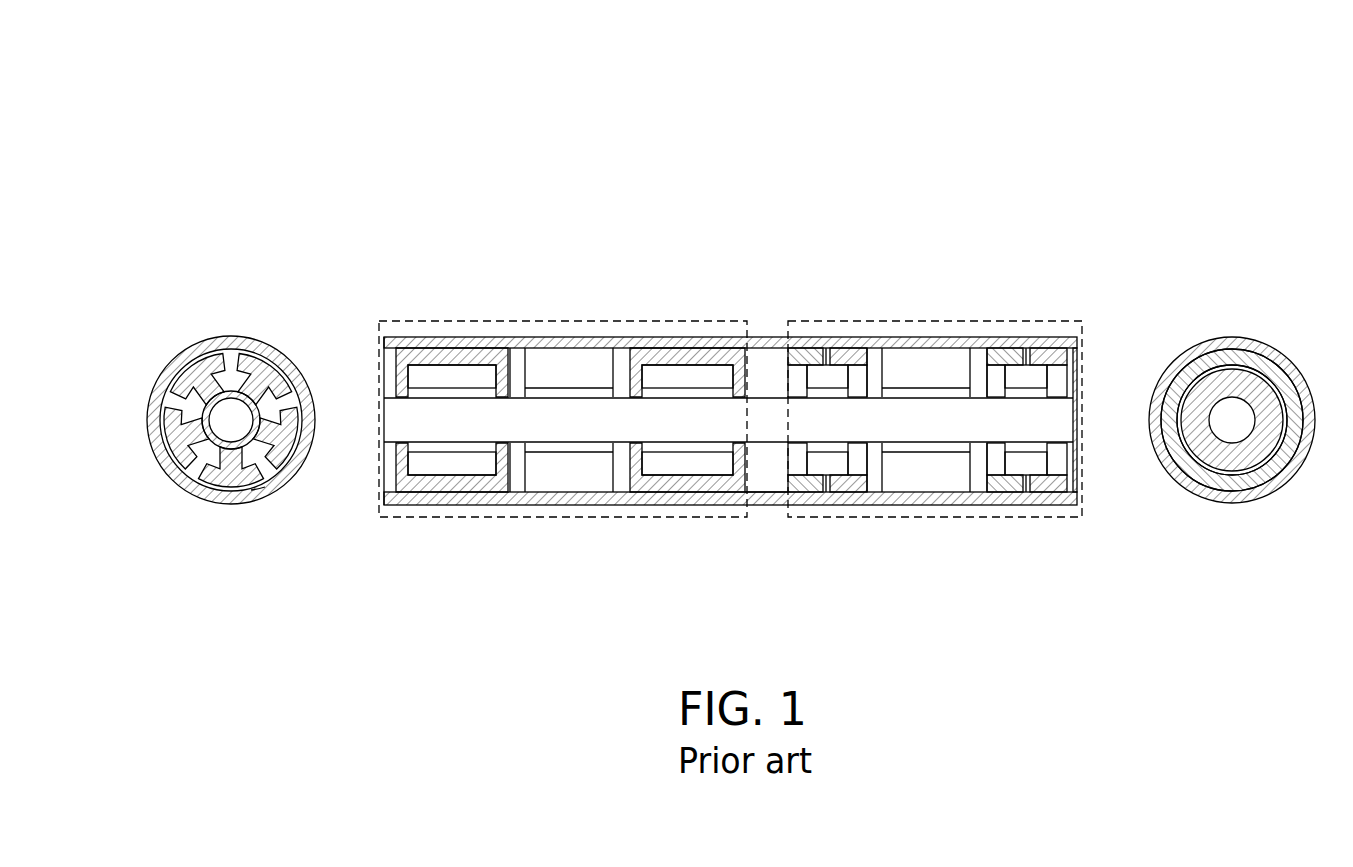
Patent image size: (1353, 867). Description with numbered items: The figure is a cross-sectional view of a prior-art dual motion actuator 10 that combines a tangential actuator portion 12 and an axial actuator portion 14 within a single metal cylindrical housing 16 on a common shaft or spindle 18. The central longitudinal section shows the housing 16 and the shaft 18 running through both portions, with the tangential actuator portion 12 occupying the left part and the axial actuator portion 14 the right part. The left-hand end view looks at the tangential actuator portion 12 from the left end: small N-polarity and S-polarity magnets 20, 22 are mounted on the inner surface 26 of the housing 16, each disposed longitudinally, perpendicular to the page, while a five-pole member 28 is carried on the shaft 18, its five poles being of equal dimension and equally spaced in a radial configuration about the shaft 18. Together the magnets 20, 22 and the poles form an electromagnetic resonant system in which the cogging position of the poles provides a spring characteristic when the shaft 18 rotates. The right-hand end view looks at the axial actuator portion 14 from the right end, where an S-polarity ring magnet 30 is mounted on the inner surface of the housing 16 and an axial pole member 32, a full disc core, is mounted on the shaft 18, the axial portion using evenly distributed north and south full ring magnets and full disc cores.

The dual motion actuator 10 is at (882, 130).
The tangential actuator portion 12 is at (516, 321).
The axial actuator portion 14 is at (983, 321).
The housing 16 is at (170, 372).
The shaft or spindle 18 is at (575, 540).
The N-polarity magnet 20 is at (258, 497).
The S-polarity magnet 22 is at (204, 497).
The inner surface 26 is at (766, 484).
The 5-pole member 28 is at (431, 540).
The S-polarity ring magnet 30 is at (1054, 540).
The axial pole member 32 is at (1236, 470).